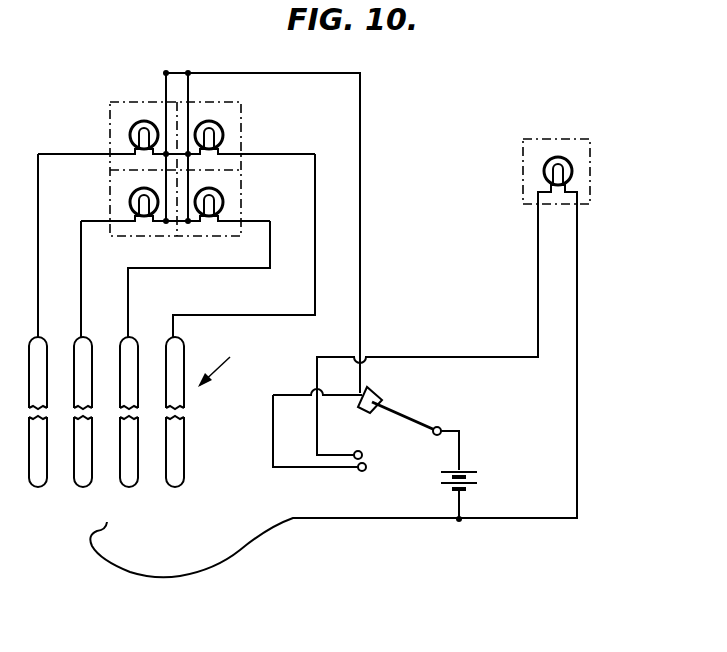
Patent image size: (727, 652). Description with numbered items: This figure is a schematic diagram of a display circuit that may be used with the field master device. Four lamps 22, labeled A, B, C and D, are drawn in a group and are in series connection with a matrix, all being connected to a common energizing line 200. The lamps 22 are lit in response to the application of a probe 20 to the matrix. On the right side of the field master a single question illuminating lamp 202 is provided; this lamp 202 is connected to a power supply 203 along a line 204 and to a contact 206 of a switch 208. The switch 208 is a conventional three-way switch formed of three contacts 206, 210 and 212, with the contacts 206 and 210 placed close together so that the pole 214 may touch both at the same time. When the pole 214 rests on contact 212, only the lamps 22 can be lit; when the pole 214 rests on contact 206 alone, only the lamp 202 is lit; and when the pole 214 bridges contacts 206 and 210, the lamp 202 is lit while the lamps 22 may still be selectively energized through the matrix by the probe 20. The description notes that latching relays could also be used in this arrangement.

The probe 20 is at (93, 502).
The lamps 22 is at (145, 121).
The common energizing line 200 is at (313, 77).
The question illuminating lamp 202 is at (563, 156).
The power supply 203 is at (477, 475).
The line 204 is at (580, 307).
The contact 206 is at (362, 454).
The switch 208 is at (423, 418).
The contact 210 is at (362, 471).
The contact 212 is at (362, 394).
The pole 214 is at (379, 389).